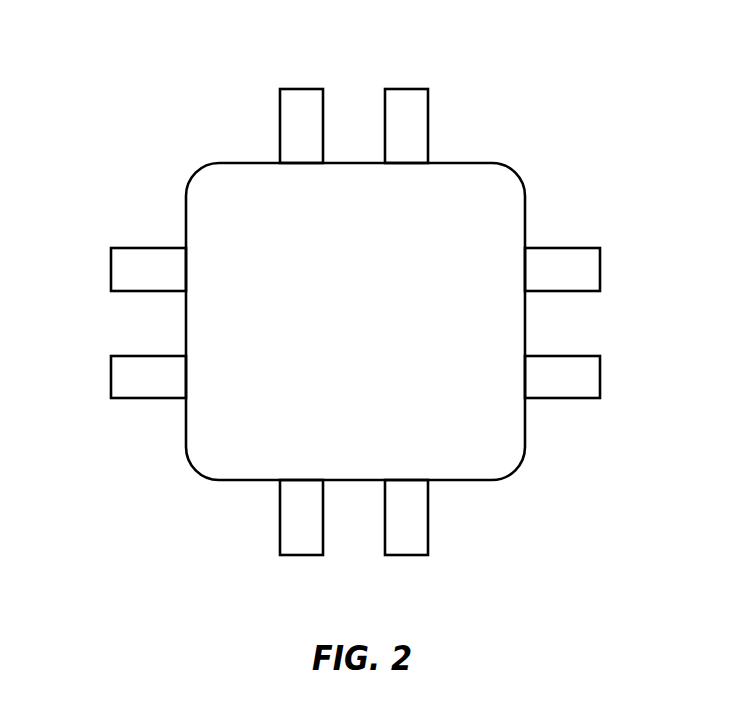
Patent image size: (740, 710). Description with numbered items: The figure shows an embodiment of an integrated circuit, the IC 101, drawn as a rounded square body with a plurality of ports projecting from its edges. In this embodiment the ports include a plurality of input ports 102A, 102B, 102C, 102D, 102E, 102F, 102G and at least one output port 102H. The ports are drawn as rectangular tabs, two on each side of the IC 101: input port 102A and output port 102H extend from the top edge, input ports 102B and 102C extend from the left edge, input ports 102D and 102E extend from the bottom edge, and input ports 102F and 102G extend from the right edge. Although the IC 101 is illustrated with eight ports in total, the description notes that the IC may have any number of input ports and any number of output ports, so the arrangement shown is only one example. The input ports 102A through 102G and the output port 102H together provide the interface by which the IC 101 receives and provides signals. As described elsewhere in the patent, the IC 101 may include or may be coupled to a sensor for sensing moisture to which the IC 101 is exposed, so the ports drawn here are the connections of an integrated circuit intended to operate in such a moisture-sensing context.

The IC 101 is at (518, 175).
The input port 102A is at (280, 123).
The input port 102B is at (137, 248).
The input port 102C is at (148, 398).
The input port 102D is at (280, 512).
The input port 102E is at (428, 515).
The input port 102F is at (571, 398).
The input port 102G is at (573, 248).
The output port 102H is at (428, 123).